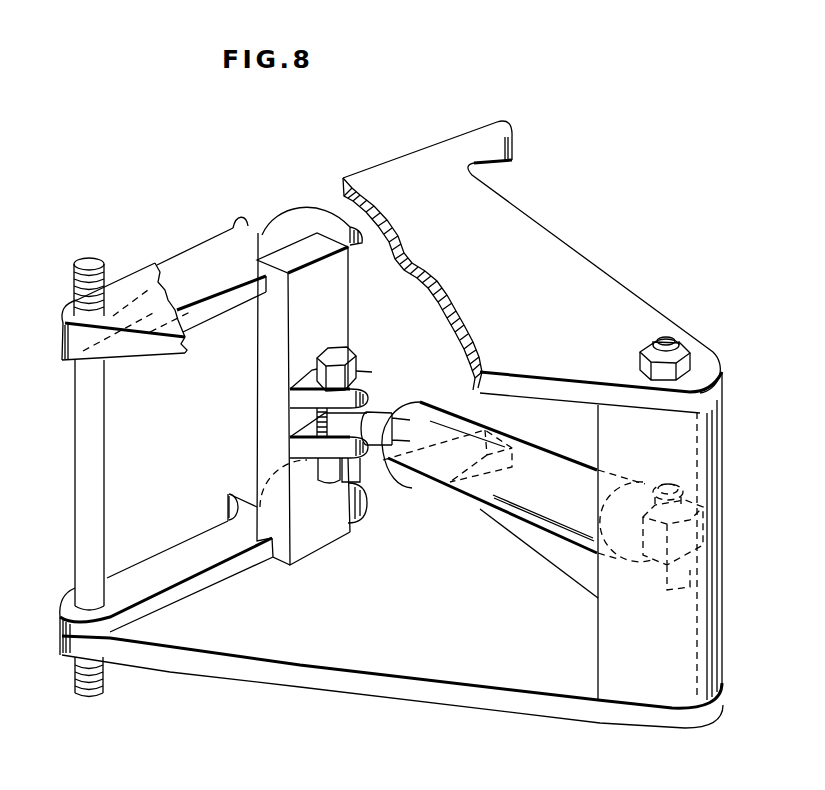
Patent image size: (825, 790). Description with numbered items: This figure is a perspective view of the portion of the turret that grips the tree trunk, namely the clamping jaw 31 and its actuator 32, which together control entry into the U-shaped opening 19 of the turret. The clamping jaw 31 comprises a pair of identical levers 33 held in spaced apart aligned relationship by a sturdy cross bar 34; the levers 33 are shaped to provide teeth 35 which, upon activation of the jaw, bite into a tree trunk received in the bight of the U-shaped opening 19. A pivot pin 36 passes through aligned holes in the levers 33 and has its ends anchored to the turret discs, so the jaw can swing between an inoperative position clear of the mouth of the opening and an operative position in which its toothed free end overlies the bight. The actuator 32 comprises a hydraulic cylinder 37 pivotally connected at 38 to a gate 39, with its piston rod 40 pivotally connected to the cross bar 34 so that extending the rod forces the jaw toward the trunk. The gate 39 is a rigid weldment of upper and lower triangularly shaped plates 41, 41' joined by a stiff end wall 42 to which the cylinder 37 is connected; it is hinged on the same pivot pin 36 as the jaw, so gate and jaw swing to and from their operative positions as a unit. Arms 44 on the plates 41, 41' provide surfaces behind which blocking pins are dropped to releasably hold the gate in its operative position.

The U-shaped opening 19 is at (531, 257).
The clamping jaw 31 is at (146, 234).
The actuator 32 is at (489, 481).
The levers 33 is at (175, 428).
The cross bar 34 is at (319, 386).
The teeth 35 is at (220, 345).
The pivot pin 36 is at (117, 477).
The hydraulic cylinder 37 is at (539, 552).
The pivotal connection 38 is at (679, 518).
The gate 39 is at (664, 296).
The piston rod 40 is at (398, 401).
The upper triangularly shaped plate 41 is at (601, 308).
The lower triangularly shaped plate 41' is at (391, 681).
The end wall 42 is at (738, 536).
The arms 44 is at (464, 282).